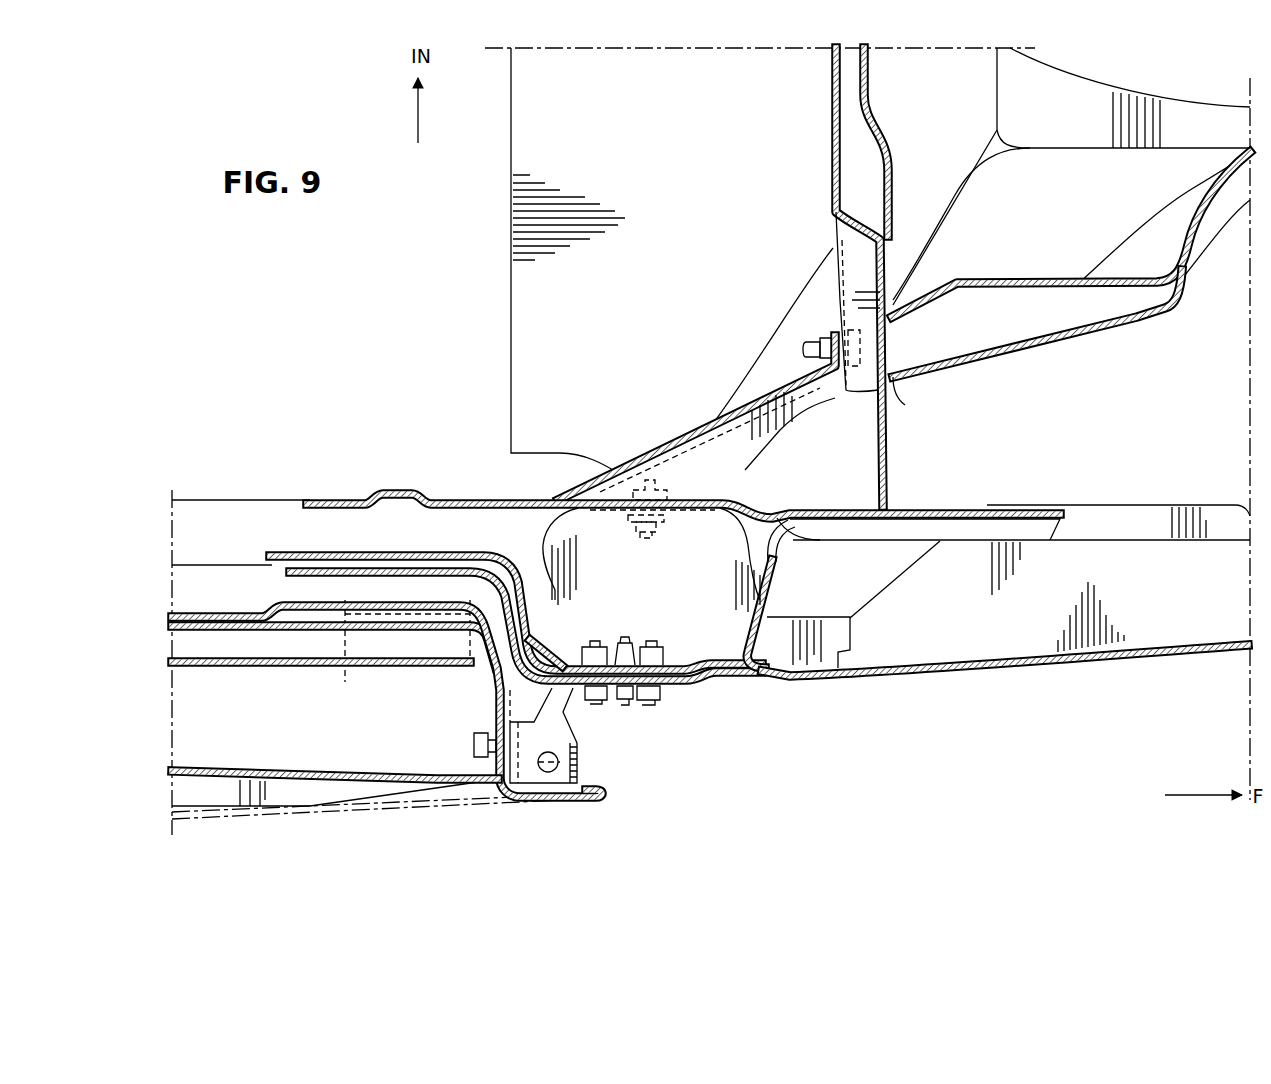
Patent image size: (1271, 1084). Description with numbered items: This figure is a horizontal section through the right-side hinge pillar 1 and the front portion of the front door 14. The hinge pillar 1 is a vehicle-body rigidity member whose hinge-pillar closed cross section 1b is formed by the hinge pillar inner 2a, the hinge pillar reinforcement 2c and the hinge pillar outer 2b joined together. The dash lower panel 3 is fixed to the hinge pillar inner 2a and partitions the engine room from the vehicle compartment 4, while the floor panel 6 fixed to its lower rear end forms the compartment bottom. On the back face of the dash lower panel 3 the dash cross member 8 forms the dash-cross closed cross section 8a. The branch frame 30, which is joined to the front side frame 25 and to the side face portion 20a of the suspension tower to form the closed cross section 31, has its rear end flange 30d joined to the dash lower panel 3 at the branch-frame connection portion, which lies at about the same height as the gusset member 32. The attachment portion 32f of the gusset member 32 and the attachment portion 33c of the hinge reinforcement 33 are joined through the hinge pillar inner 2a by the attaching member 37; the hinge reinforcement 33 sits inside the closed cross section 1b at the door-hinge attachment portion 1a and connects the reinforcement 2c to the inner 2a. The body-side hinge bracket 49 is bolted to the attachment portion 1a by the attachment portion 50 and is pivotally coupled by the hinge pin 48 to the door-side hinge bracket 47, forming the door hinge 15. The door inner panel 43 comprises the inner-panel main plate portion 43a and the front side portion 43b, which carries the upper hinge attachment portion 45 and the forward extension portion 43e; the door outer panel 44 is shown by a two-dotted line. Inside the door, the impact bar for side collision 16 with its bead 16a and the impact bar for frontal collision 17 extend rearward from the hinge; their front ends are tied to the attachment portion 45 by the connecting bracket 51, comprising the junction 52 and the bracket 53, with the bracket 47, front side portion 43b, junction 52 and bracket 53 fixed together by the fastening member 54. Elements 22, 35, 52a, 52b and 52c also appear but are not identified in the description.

The hinge pillar 1 is at (375, 492).
The door-hinge attachment portion 1a is at (664, 645).
The hinge-pillar closed cross section 1b is at (446, 539).
The hinge pillar inner 2a is at (476, 500).
The hinge pillar outer 2b is at (692, 684).
The hinge pillar reinforcement 2c is at (399, 553).
The dash lower panel 3 is at (947, 198).
The vehicle compartment 4 is at (497, 418).
The floor panel 6 is at (512, 115).
The dash cross member 8 is at (826, 177).
The dash-cross closed cross section 8a is at (850, 146).
The front door 14 is at (362, 823).
The door hinge 15 is at (614, 721).
The impact bar for side collision 16 is at (303, 768).
The bead 16a is at (221, 805).
The impact bar for frontal collision 17 is at (230, 666).
The side face portion 20a is at (1050, 280).
The floor reinforcement 22 is at (1005, 672).
The front side frame 25 is at (1190, 107).
The branch frame 30 is at (1100, 330).
The rear end flange 30d is at (897, 387).
The closed cross section 31 is at (971, 329).
The gusset member 32 is at (702, 422).
The attachment portion 32f is at (660, 485).
The hinge reinforcement 33 is at (539, 548).
The attachment portion 33c is at (674, 505).
The bolt 35 is at (824, 336).
The attaching member 37 is at (647, 515).
The door inner panel 43 is at (221, 615).
The inner-panel main plate portion 43a is at (253, 616).
The front side portion 43b is at (487, 668).
The extension portion 43e is at (542, 800).
The door outer panel 44 is at (486, 812).
The upper hinge attachment portion 45 is at (519, 703).
The door-side hinge bracket 47 is at (560, 762).
The hinge pin 48 is at (573, 775).
The body-side hinge bracket 49 is at (560, 712).
The attachment portion 50 is at (596, 703).
The connecting bracket 51 is at (372, 695).
The junction 52 is at (416, 673).
The reinforcement lower wall 52a is at (366, 668).
The reinforcement upper wall 52b is at (401, 612).
The reinforcement rear wall 52c is at (497, 726).
The bracket 53 is at (459, 768).
The fastening member 54 is at (485, 758).